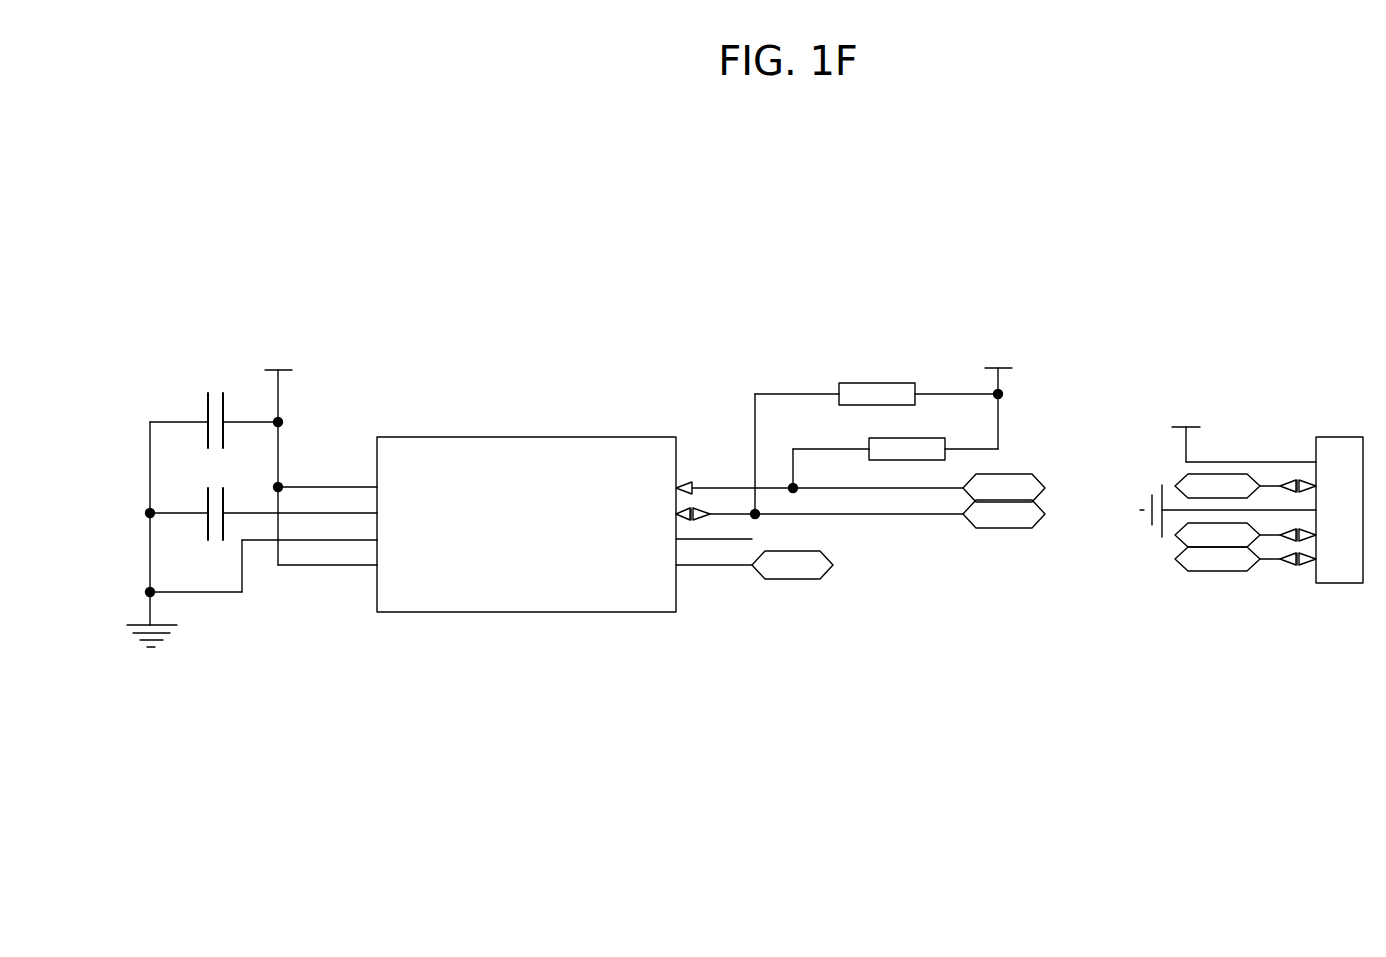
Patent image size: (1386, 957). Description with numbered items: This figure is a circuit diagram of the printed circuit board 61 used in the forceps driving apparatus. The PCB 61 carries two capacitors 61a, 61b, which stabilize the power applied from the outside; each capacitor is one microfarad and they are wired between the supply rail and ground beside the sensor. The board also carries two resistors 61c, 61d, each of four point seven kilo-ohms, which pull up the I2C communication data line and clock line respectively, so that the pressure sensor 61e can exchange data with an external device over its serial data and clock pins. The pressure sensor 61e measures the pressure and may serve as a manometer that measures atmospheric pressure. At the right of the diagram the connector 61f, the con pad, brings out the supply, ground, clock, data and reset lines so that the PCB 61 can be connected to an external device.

The printed circuit board 61 is at (1105, 696).
The capacitor 61a is at (228, 405).
The capacitor 61b is at (208, 528).
The resistor 61c is at (861, 383).
The resistor 61d is at (908, 461).
The pressure sensor 61e is at (618, 437).
The connector U2 (CONPAD5) 61f is at (1315, 437).